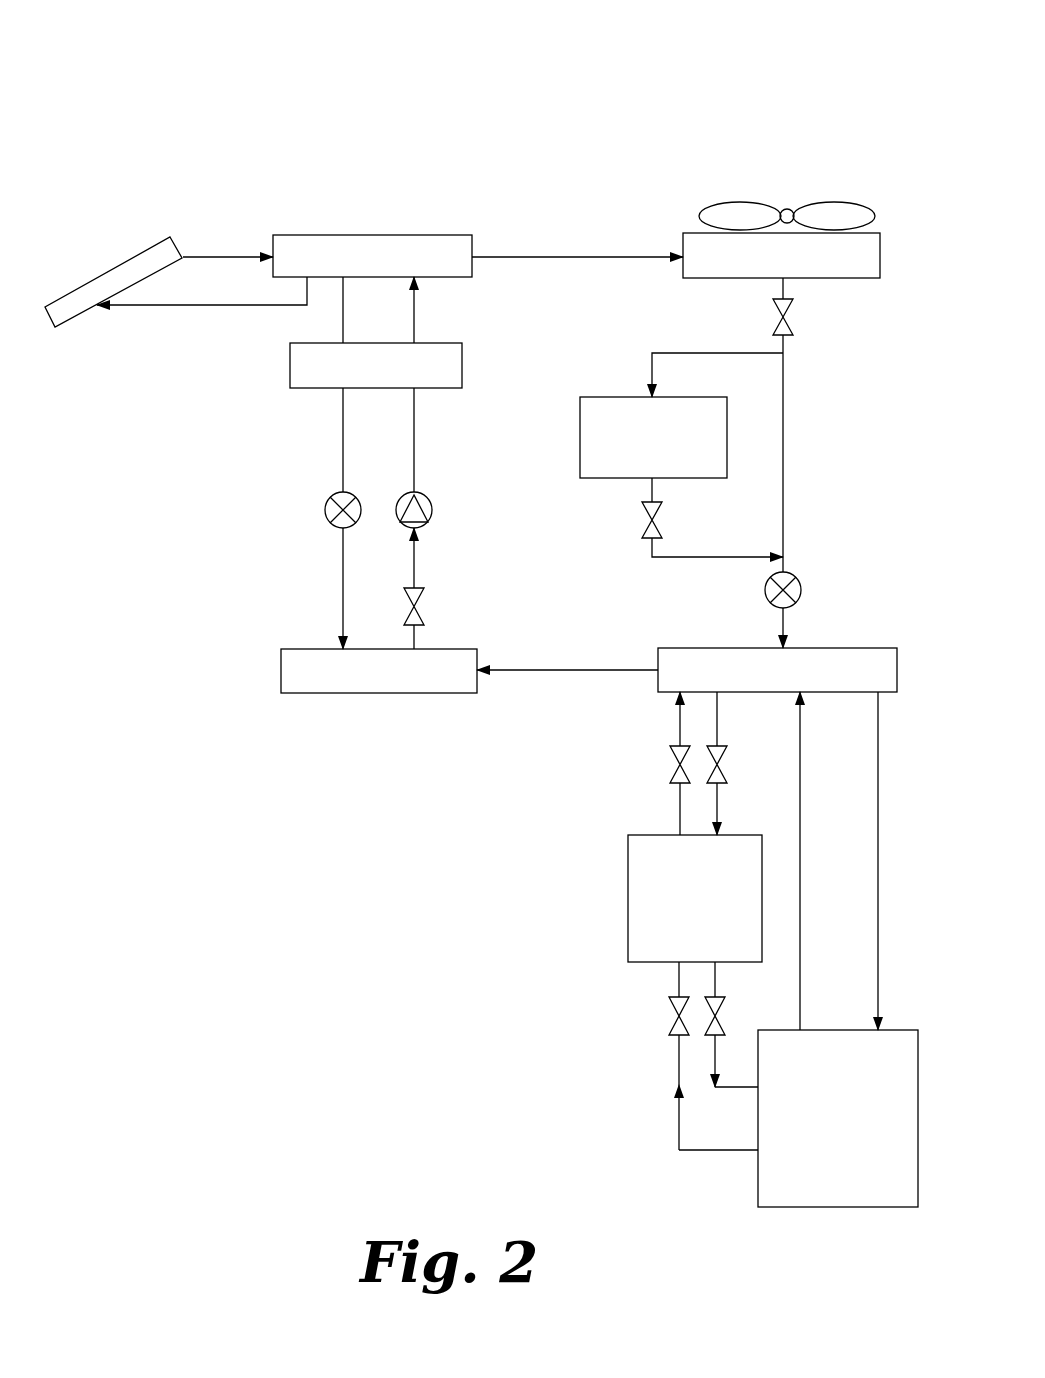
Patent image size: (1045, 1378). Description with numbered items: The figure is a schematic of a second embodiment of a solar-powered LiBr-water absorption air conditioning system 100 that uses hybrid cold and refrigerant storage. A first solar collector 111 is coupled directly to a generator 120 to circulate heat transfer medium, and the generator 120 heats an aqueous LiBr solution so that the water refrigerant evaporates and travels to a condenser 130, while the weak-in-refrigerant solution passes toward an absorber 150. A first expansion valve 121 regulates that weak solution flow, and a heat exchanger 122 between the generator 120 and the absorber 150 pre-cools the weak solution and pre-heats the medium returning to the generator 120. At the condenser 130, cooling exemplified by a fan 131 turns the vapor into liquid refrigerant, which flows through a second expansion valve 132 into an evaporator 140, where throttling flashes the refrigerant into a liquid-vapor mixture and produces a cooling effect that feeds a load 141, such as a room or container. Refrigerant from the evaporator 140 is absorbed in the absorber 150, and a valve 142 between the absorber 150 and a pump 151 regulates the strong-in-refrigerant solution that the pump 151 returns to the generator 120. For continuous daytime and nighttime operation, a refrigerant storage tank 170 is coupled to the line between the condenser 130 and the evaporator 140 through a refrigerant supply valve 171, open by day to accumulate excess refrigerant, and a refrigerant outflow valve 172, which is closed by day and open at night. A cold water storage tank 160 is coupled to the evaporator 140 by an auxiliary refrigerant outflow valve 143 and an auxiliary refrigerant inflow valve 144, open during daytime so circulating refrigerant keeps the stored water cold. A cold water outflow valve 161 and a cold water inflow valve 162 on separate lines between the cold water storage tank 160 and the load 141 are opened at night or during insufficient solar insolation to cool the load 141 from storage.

The solar-powered LiBr-water absorption air conditioning system 100 is at (378, 98).
The first solar collector 111 is at (113, 268).
The generator 120 is at (423, 235).
The first expansion valve 121 is at (326, 505).
The heat exchanger 122 is at (290, 384).
The condenser 130 is at (852, 278).
The fan 131 is at (833, 200).
The second expansion valve 132 is at (800, 578).
The evaporator 140 is at (858, 645).
The load 141 is at (758, 1175).
The valve 142 is at (422, 608).
The auxiliary refrigerant outflow valve 143 is at (723, 773).
The auxiliary refrigerant inflow valve 144 is at (670, 775).
The absorber 150 is at (363, 695).
The pump 151 is at (432, 491).
The cold water storage tank 160 is at (628, 902).
The cold water outflow valve 161 is at (725, 1018).
The cold water inflow valve 162 is at (667, 1027).
The refrigerant storage tank 170 is at (580, 410).
The refrigerant supply valve 171 is at (795, 330).
The refrigerant outflow valve 172 is at (642, 508).